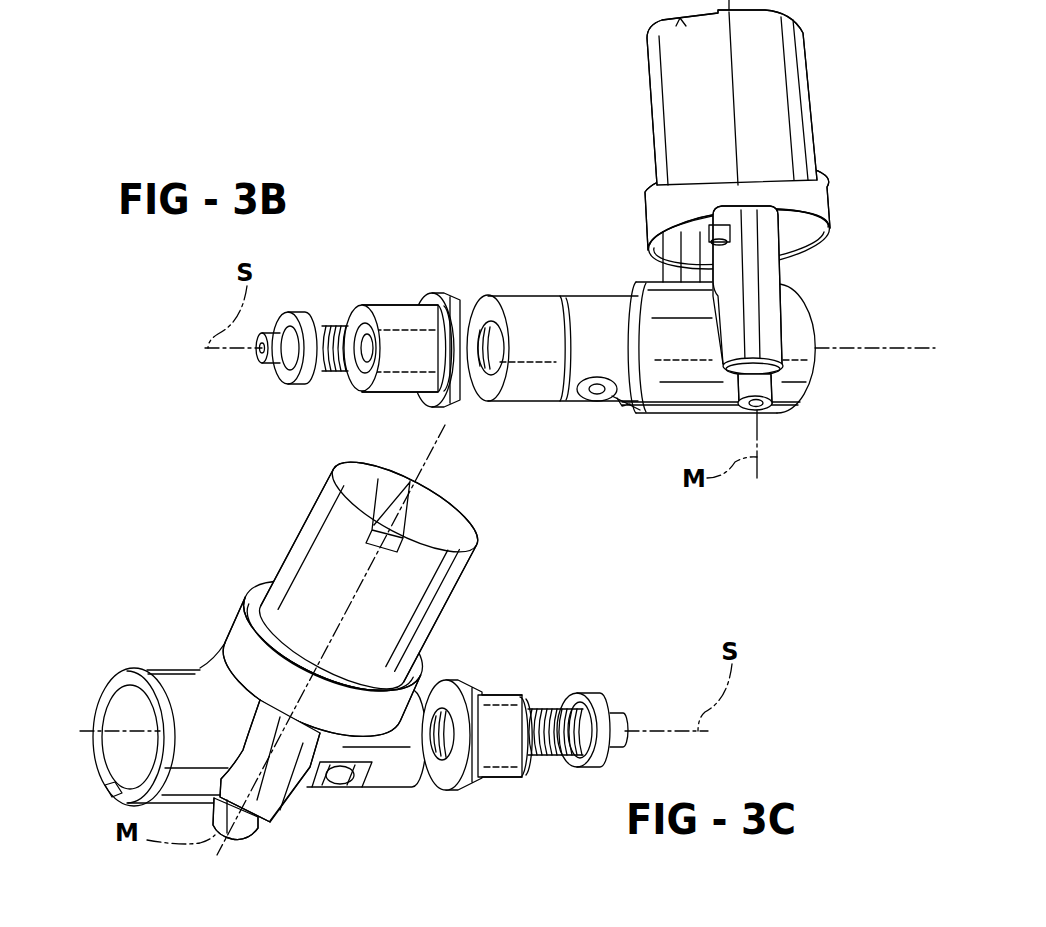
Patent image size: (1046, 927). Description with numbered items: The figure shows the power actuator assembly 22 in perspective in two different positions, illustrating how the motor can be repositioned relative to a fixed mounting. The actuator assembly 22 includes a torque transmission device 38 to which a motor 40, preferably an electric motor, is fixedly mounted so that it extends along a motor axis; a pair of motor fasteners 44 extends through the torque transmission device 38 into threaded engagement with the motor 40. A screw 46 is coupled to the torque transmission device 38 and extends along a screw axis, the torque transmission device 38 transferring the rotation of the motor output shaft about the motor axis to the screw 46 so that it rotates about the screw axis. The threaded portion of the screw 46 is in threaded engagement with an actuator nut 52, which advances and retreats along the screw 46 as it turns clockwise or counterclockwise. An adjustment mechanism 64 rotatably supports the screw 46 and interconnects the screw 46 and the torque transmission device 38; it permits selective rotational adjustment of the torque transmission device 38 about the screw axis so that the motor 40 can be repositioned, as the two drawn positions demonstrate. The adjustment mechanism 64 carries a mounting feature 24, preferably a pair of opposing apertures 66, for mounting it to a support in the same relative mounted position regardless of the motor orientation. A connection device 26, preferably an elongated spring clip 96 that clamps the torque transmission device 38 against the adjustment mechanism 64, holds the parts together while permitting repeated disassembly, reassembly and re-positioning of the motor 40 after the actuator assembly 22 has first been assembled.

In FIG. 3B, the actuator assembly 22 is at (786, 210).
In FIG. 3C, the actuator assembly 22 is at (344, 640).
In FIG. 3B, the mounting feature 24 is at (689, 357).
In FIG. 3C, the mounting feature 24 is at (261, 723).
In FIG. 3B, the connection device 26 is at (689, 357).
In FIG. 3B, the torque transmission device 38 is at (798, 338).
In FIG. 3C, the torque transmission device 38 is at (200, 690).
In FIG. 3B, the motor 40 is at (793, 102).
In FIG. 3C, the motor 40 is at (318, 558).
In FIG. 3B, the motor fasteners 44 is at (829, 233).
In FIG. 3B, the screw 46 is at (330, 325).
In FIG. 3C, the screw 46 is at (542, 708).
In FIG. 3B, the actuator nut 52 is at (395, 313).
In FIG. 3C, the actuator nut 52 is at (495, 703).
In FIG. 3B, the adjustment mechanism 64 is at (588, 306).
In FIG. 3C, the adjustment mechanism 64 is at (352, 745).
In FIG. 3B, the aperture 66 is at (600, 400).
In FIG. 3C, the aperture 66 is at (333, 788).
In FIG. 3B, the spring clip 96 is at (680, 408).